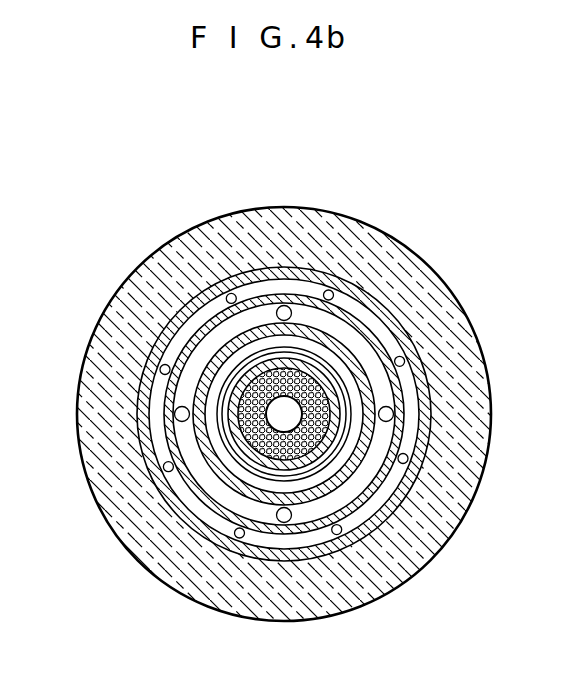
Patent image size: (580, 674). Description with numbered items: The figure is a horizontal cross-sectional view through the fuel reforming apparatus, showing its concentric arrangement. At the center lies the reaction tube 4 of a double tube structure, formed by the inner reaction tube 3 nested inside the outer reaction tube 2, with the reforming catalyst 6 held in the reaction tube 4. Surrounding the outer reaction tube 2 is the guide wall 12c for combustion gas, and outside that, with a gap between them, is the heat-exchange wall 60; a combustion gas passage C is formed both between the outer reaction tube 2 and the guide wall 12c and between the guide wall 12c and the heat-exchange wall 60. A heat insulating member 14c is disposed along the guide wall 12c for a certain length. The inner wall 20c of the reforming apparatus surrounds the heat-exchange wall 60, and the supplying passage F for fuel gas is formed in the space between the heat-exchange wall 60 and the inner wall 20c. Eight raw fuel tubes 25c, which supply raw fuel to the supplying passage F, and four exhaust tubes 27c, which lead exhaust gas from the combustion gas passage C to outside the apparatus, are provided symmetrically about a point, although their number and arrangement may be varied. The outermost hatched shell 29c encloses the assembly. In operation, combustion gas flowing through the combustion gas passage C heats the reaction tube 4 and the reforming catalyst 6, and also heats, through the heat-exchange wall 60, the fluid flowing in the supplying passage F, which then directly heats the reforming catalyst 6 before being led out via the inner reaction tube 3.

The outer reaction tube 2 is at (305, 388).
The inner reaction tube 3 is at (322, 392).
The reaction tube of a double tube structure 4 is at (472, 218).
The reforming catalyst 6 is at (258, 323).
The guide wall for combustion gas 12c is at (200, 400).
The heat insulating member 14c is at (380, 502).
The inner wall of the reforming apparatus 20c is at (157, 478).
The raw fuel tubes 25c is at (405, 359).
The exhaust tubes 27c is at (394, 405).
The outer housing 29c is at (462, 473).
The heat-exchange wall 60 is at (170, 432).
The supplying passage for fuel gas F is at (366, 485).
The combustion gas passage C is at (305, 505).